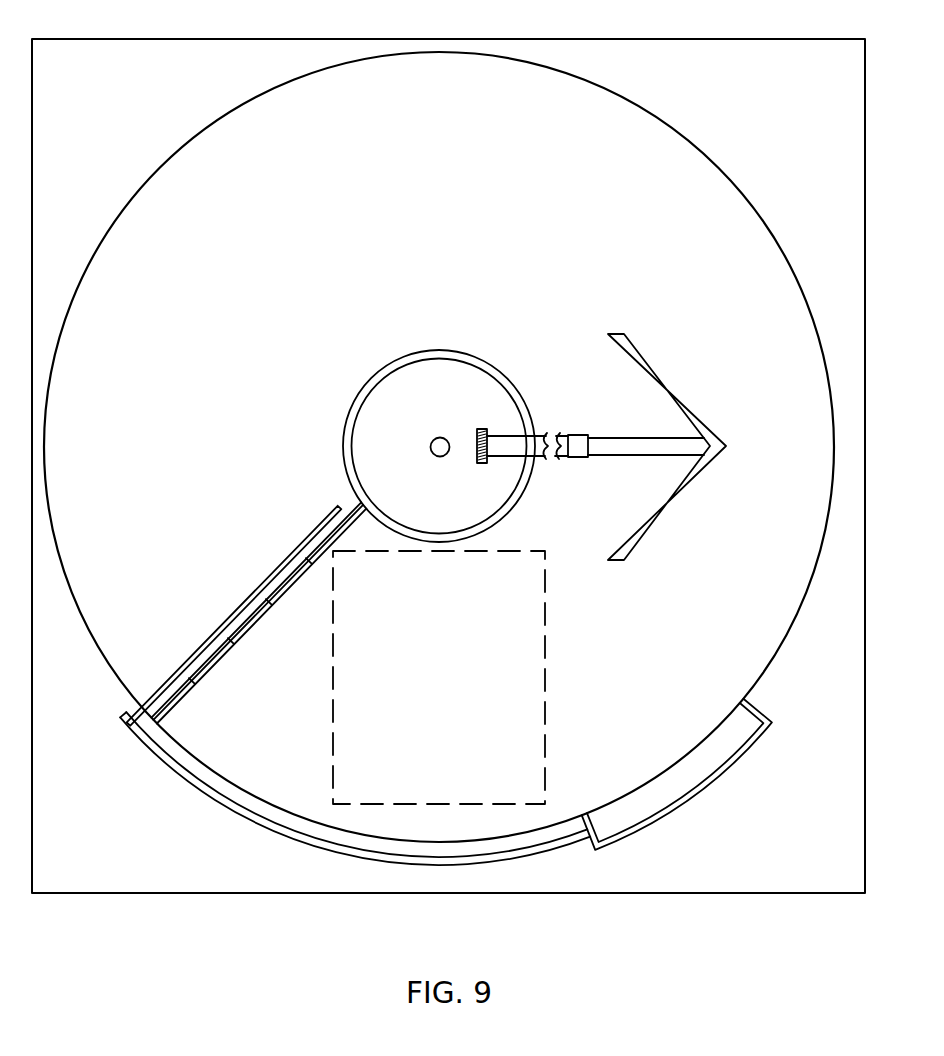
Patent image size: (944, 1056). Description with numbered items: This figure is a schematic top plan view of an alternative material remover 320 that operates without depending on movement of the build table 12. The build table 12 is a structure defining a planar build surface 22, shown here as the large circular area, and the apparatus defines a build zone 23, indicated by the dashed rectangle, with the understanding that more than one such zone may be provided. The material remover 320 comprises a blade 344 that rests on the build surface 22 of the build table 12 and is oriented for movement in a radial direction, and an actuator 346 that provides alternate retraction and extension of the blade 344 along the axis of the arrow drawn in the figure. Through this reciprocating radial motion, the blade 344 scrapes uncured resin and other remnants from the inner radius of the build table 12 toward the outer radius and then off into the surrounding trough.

The build table 12 is at (707, 157).
The build surface 22 is at (578, 192).
The build zone 23 is at (333, 732).
The material remover 320 is at (554, 424).
The blade 344 is at (675, 397).
The actuator 346 is at (608, 450).